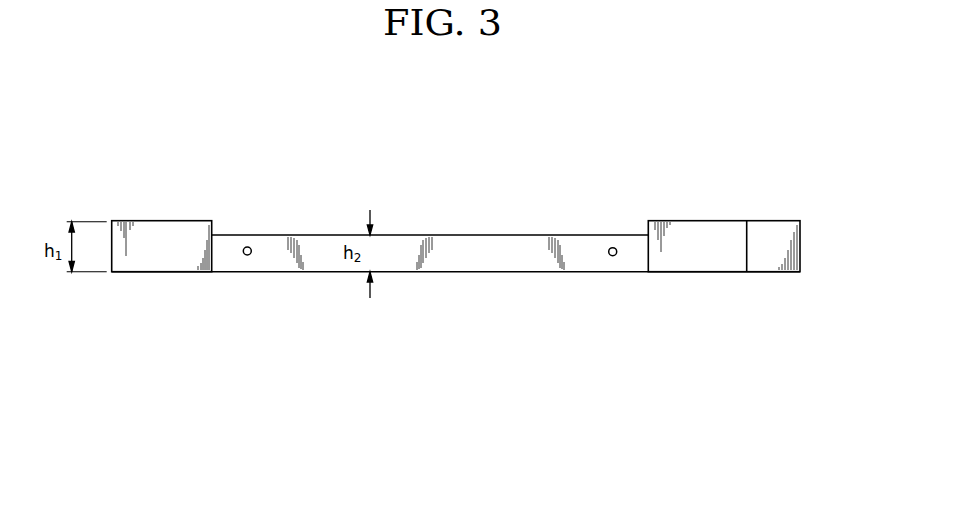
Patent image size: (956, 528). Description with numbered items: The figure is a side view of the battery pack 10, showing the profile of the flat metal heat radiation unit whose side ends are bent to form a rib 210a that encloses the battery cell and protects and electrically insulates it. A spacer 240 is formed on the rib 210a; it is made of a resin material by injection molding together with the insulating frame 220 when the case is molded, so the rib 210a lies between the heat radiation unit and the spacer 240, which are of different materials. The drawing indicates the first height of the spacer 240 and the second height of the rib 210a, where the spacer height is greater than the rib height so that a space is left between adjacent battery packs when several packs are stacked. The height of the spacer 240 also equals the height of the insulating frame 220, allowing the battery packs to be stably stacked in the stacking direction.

The battery pack 10 is at (456, 210).
The spacer 240 is at (167, 267).
The insulating frame 220 is at (722, 265).
The rib 210a is at (602, 272).